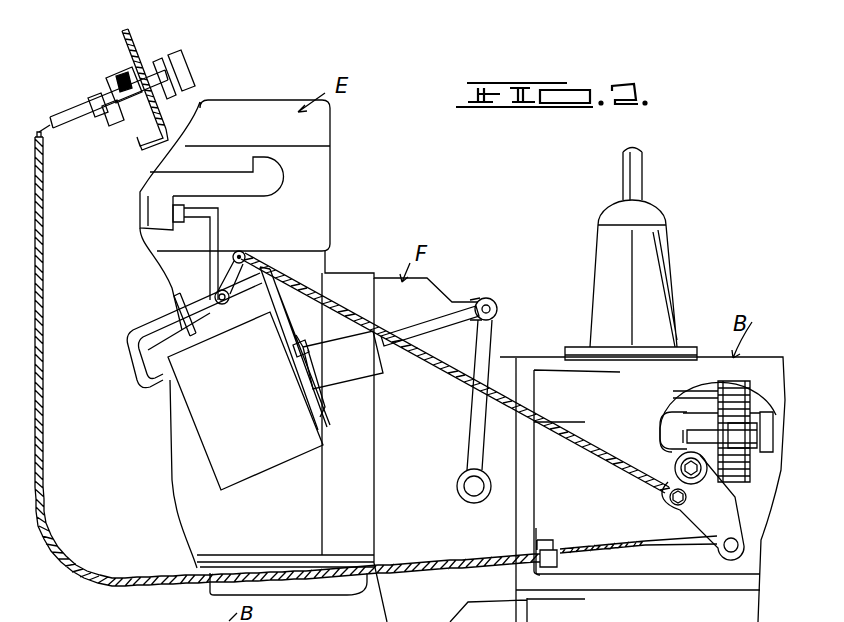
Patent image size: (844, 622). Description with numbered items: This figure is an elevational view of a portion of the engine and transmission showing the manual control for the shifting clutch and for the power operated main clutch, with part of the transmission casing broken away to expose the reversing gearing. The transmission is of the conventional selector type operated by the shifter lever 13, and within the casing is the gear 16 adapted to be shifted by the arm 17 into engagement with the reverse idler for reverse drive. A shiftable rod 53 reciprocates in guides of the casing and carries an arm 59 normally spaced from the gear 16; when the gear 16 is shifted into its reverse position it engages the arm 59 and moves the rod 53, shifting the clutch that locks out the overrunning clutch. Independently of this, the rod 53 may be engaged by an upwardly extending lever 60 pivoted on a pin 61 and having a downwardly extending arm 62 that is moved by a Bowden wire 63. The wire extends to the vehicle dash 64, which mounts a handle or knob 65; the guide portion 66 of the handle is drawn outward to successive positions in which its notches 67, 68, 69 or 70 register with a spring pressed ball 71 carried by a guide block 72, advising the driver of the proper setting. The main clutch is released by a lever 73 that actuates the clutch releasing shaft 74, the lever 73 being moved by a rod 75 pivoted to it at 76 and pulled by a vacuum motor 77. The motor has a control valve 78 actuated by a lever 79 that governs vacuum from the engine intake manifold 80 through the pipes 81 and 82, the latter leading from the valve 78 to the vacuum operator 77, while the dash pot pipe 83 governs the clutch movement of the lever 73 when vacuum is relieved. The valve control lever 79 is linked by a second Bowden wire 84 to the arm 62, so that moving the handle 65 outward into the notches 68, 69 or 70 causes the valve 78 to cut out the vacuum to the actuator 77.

The shifter lever 13 is at (633, 176).
The gear 16 is at (755, 360).
The arm 17 is at (720, 380).
The shiftable rod 53 is at (670, 408).
The arm 59 is at (770, 424).
The upwardly extending arm or lever 60 is at (665, 432).
The pin 61 is at (672, 462).
The downwardly extending arm 62 is at (718, 514).
The Bowden wire 63 is at (50, 122).
The vehicle dash 64 is at (122, 36).
The handle or knob 65 is at (190, 70).
The guide portion 66 is at (120, 124).
The notch 67 is at (150, 109).
The notch 68 is at (112, 80).
The notch 69 is at (95, 113).
The notch 70 is at (66, 114).
The spring pressed ball 71 is at (168, 66).
The guide block 72 is at (138, 62).
The lever 73 is at (497, 352).
The shaft 74 is at (474, 494).
The rod 75 is at (428, 328).
The pivot 76 is at (496, 302).
The motor 77 is at (245, 468).
The control valve 78 is at (192, 290).
The lever 79 is at (231, 251).
The engine intake manifold 80 is at (220, 176).
The pipe 81 is at (212, 233).
The pipe 82 is at (135, 364).
The dash pot pipe 83 is at (298, 326).
The Bowden wire 84 is at (447, 376).